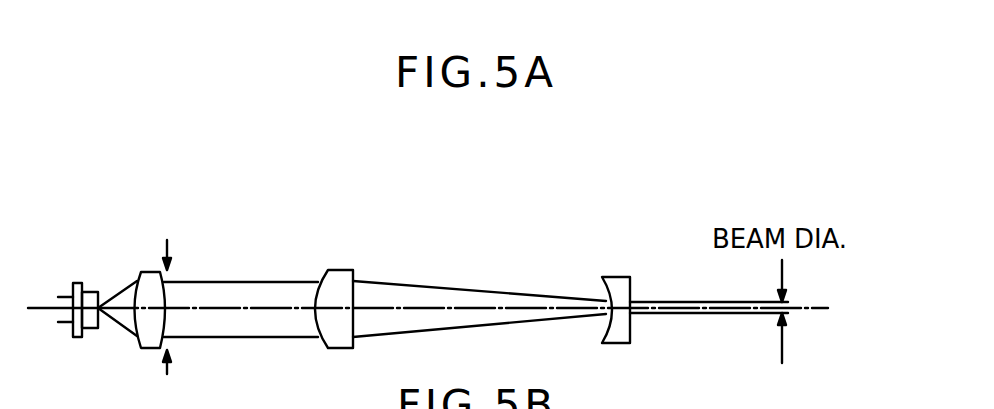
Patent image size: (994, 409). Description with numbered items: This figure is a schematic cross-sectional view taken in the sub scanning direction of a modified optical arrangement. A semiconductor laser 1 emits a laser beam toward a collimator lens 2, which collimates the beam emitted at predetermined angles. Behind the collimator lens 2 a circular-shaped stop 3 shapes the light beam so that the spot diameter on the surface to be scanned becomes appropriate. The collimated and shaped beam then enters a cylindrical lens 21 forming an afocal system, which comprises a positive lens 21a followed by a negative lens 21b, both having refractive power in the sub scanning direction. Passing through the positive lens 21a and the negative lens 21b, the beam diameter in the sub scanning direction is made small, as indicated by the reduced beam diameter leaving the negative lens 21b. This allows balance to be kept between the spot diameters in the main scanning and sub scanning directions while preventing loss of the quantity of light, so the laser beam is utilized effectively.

The semiconductor laser 1 is at (86, 340).
The collimator lens 2 is at (146, 352).
The stop 3 is at (167, 374).
The cylindrical lens 21 is at (485, 243).
The positive lens 21a is at (340, 270).
The negative lens 21b is at (620, 268).